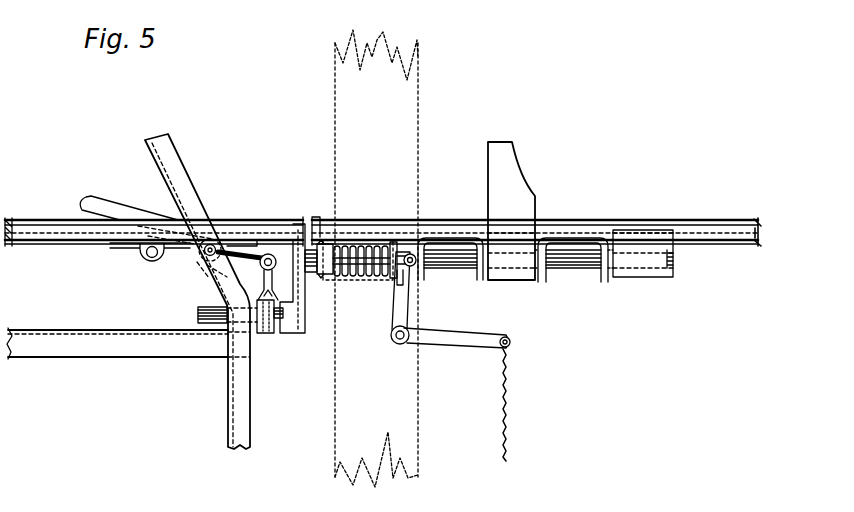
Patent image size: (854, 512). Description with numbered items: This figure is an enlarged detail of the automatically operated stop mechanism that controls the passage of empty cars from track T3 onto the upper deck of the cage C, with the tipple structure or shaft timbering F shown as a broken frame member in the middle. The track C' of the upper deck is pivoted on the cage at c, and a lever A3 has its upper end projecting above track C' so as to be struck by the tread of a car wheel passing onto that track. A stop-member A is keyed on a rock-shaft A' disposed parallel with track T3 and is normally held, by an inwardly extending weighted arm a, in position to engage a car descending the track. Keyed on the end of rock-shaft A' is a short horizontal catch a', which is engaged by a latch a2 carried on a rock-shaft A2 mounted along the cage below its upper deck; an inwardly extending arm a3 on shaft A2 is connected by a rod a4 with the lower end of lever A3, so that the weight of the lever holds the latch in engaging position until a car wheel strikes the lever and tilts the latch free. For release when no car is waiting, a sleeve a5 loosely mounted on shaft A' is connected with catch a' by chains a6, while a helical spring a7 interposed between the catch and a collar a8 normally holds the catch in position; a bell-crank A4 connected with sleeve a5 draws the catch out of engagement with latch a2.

The track T3 is at (693, 220).
The lever A3 is at (110, 208).
The track C' is at (205, 291).
The pivot c is at (203, 253).
The rod a4 is at (268, 283).
The arm a3 is at (267, 333).
The rock-shaft A2 is at (198, 313).
The latch a2 is at (303, 293).
The catch a' is at (332, 276).
The chains a6 is at (368, 243).
The helical spring a7 is at (375, 280).
The collar a8 is at (385, 281).
The sleeve a5 is at (408, 253).
The bell-crank A4 is at (450, 332).
The rock-shaft A' is at (515, 278).
The stop-member A is at (511, 211).
The weighted arm a is at (658, 267).
The cage C is at (128, 364).
The tipple structure F is at (376, 258).